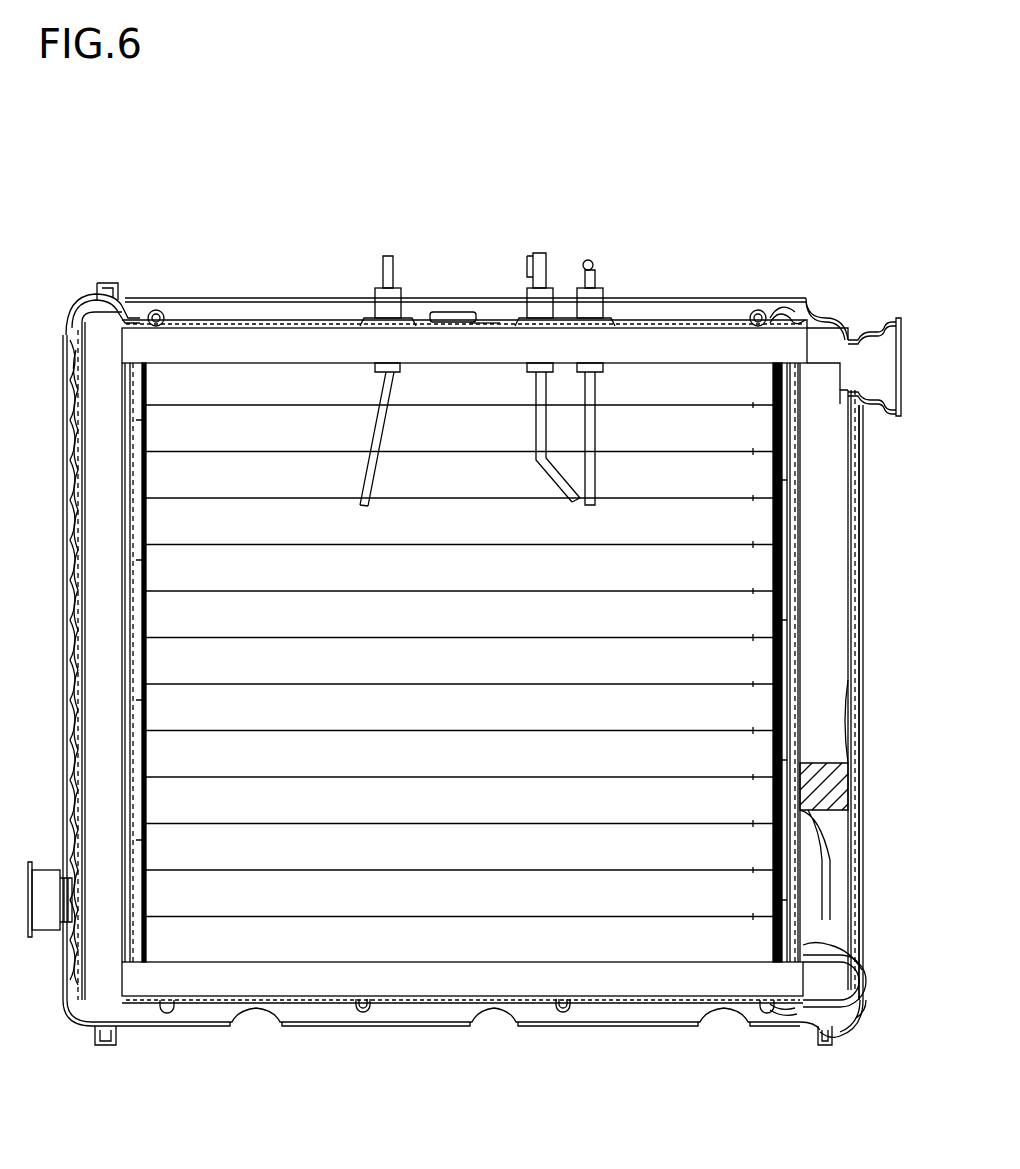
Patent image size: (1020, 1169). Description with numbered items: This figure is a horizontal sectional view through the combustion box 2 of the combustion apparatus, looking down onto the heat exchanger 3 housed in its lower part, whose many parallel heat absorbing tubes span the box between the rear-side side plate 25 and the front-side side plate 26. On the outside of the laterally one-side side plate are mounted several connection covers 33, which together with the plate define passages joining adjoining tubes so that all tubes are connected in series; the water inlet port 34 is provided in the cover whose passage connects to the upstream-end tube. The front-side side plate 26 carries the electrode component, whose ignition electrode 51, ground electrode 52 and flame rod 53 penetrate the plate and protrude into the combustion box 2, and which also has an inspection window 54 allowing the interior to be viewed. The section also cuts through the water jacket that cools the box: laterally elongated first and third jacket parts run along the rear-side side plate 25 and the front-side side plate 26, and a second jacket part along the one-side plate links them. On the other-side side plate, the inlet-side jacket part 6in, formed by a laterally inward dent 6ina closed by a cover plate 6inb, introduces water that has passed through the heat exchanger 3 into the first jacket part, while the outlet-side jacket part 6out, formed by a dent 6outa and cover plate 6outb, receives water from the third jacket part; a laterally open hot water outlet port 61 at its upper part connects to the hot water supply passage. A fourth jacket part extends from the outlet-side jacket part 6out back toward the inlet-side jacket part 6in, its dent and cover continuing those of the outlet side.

The combustion box 2 is at (267, 320).
The heat exchanger 3 is at (641, 392).
The rear-side side plate 25 is at (420, 1000).
The front-side side plate 26 is at (488, 326).
The connection covers 33 is at (70, 850).
The water inlet port 34 is at (24, 905).
The ignition electrode 51 is at (590, 262).
The ground electrode 52 is at (540, 253).
The flame rod 53 is at (388, 256).
The inspection window 54 is at (451, 312).
The hot water outlet port 61 is at (903, 372).
The inlet-side jacket part 6in is at (850, 990).
The dent 6ina is at (795, 1010).
The cover plate 6inb is at (856, 1000).
The outlet-side jacket part 6out is at (866, 373).
The dent 6outa is at (778, 318).
The cover plate 6outb is at (845, 318).